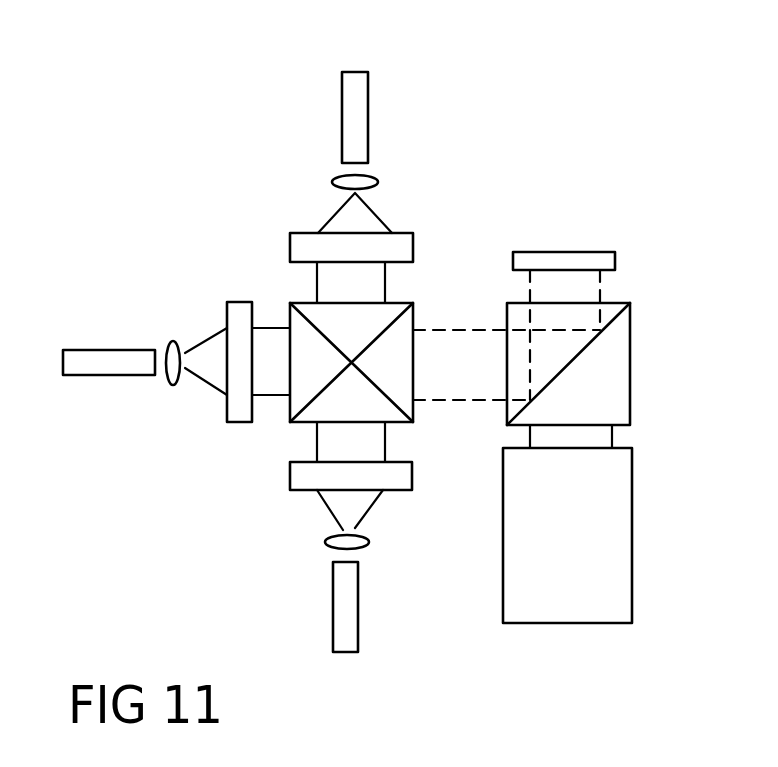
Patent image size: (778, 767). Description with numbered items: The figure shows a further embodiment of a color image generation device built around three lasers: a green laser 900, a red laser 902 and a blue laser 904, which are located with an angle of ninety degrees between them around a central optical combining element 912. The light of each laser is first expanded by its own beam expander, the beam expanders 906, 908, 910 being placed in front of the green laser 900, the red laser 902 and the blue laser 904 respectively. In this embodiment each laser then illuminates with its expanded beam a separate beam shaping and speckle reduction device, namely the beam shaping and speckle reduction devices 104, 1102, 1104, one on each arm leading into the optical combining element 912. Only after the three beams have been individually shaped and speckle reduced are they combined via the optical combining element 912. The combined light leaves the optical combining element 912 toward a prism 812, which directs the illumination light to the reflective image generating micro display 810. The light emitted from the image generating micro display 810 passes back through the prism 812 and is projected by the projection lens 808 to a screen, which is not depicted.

The green laser 900 is at (357, 72).
The beam expander 906 is at (378, 175).
The beam shaping and speckle reduction device 104 is at (413, 237).
The optical combining element 912 is at (290, 303).
The red laser 902 is at (85, 350).
The beam expander 908 is at (168, 384).
The beam shaping and speckle reduction device 1102 is at (237, 422).
The reflective image generating micro display 810 is at (588, 250).
The prism 812 is at (633, 366).
The projection lens 808 is at (637, 565).
The beam shaping and speckle reduction device 1104 is at (412, 480).
The beam expander 910 is at (367, 548).
The blue laser 904 is at (347, 652).